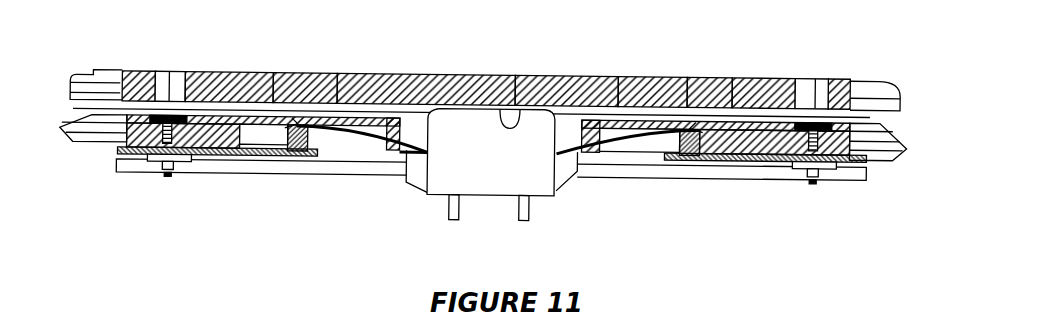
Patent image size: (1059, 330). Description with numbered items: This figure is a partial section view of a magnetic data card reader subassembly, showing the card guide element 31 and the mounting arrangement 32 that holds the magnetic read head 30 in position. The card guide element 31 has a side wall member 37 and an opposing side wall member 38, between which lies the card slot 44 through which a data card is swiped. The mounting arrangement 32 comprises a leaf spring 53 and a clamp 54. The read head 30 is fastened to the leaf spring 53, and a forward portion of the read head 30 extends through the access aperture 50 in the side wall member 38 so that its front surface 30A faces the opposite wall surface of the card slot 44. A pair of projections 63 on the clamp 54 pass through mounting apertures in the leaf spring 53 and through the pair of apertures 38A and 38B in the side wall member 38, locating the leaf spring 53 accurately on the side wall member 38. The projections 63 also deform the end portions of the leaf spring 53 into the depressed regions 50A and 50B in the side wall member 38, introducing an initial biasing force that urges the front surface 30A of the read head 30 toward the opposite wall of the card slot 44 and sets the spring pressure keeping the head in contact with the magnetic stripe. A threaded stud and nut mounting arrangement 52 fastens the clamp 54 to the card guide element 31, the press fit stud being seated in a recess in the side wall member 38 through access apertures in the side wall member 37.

The magnetic read head 30 is at (446, 178).
The front surface of transducer 30A is at (512, 112).
The card guide element 31 is at (851, 62).
The mounting arrangement 32 is at (649, 163).
The side wall member 37 is at (110, 72).
The side wall member 38 is at (112, 141).
The aperture 38A is at (297, 118).
The aperture 38B is at (685, 121).
The card slot 44 is at (716, 112).
The access aperture 50 is at (575, 154).
The depressed region 50A is at (270, 74).
The depressed region 50B is at (618, 131).
The threaded stud and nut mounting arrangement 52 is at (168, 180).
The leaf spring 53 is at (375, 170).
The clamp 54 is at (272, 170).
The projections 63 is at (330, 119).